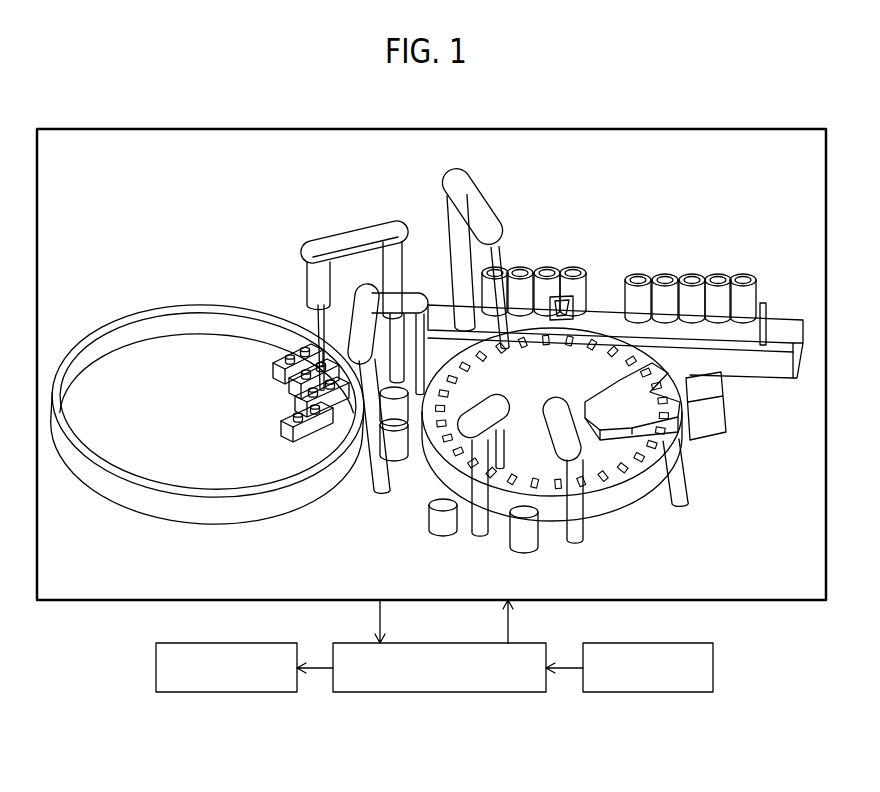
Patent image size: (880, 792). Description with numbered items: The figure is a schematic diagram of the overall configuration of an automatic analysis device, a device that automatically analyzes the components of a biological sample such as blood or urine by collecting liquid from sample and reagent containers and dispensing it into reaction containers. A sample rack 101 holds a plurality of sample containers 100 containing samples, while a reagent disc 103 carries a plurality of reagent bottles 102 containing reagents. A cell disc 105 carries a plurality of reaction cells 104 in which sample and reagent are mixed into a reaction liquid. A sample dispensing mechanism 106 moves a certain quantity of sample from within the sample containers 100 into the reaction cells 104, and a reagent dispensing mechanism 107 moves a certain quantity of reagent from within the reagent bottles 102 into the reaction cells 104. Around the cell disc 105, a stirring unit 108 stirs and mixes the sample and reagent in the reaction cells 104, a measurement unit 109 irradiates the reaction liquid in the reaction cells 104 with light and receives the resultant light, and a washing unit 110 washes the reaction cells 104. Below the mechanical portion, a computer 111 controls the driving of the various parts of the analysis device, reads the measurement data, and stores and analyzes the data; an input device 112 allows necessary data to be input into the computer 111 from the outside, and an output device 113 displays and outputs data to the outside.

The sample containers 100 is at (646, 274).
The sample rack 101 is at (764, 305).
The reagent bottles 102 is at (302, 358).
The reagent disc 103 is at (233, 316).
The reaction cells 104 is at (640, 474).
The cell disc 105 is at (596, 510).
The sample dispensing mechanism 106 is at (483, 214).
The reagent dispensing mechanism 107 is at (355, 238).
The stirring unit 108 is at (478, 526).
The measurement unit 109 is at (733, 420).
The washing unit 110 is at (682, 484).
The computer 111 is at (440, 693).
The input device 112 is at (645, 693).
The output device 113 is at (232, 693).